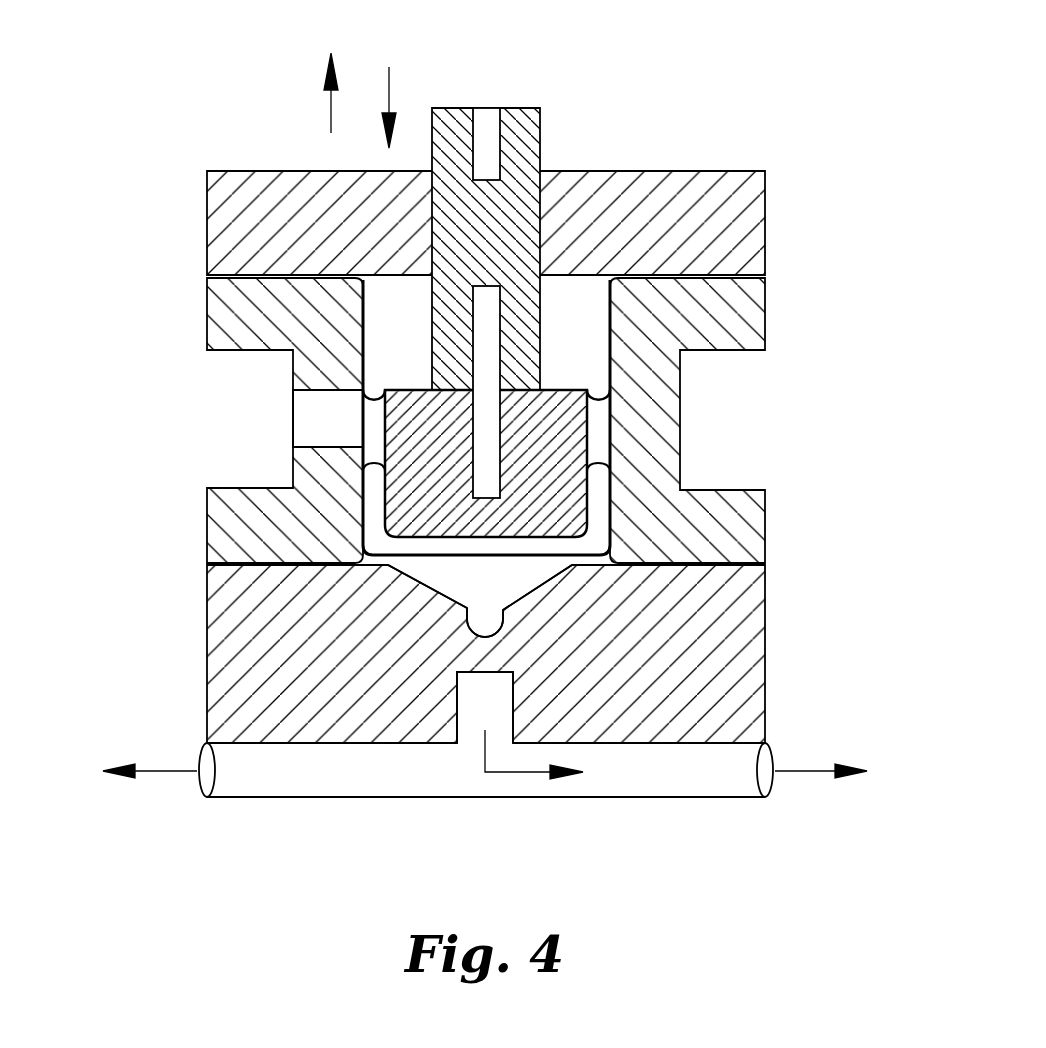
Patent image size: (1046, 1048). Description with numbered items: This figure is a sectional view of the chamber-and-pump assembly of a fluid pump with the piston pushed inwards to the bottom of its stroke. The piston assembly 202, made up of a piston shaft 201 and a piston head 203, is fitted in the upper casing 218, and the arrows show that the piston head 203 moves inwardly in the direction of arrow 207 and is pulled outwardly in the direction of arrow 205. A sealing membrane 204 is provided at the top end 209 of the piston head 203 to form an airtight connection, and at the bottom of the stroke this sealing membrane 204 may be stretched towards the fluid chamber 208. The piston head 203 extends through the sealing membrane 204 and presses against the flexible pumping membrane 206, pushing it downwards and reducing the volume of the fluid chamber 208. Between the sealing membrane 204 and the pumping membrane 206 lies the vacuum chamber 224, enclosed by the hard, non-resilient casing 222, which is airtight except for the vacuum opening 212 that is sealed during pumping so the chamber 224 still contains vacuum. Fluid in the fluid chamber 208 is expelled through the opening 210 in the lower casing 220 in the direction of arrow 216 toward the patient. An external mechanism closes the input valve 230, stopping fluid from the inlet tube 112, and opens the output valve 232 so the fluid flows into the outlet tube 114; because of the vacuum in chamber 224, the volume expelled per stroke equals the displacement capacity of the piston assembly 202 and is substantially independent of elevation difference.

The piston shaft 201 is at (557, 219).
The piston assembly 202 is at (543, 117).
The piston head 203 is at (397, 507).
The sealing membrane 204 is at (598, 390).
The arrow indicating outward pull direction 205 is at (331, 108).
The pumping membrane 206 is at (610, 462).
The arrow indicating inward push direction 207 is at (389, 88).
The fluid chamber 208 is at (606, 540).
The top end of piston head 209 is at (405, 390).
The opening 210 is at (493, 623).
The vacuum opening 212 is at (293, 420).
The arrow indicating expelled fluid flow 216 is at (523, 775).
The upper casing 218 is at (766, 213).
The lower casing 220 is at (765, 725).
The casing 222 is at (220, 308).
The vacuum chamber 224 is at (592, 440).
The input valve 230 is at (205, 797).
The output valve 232 is at (768, 797).
The inlet tube 112 is at (90, 824).
The outlet tube 114 is at (928, 824).